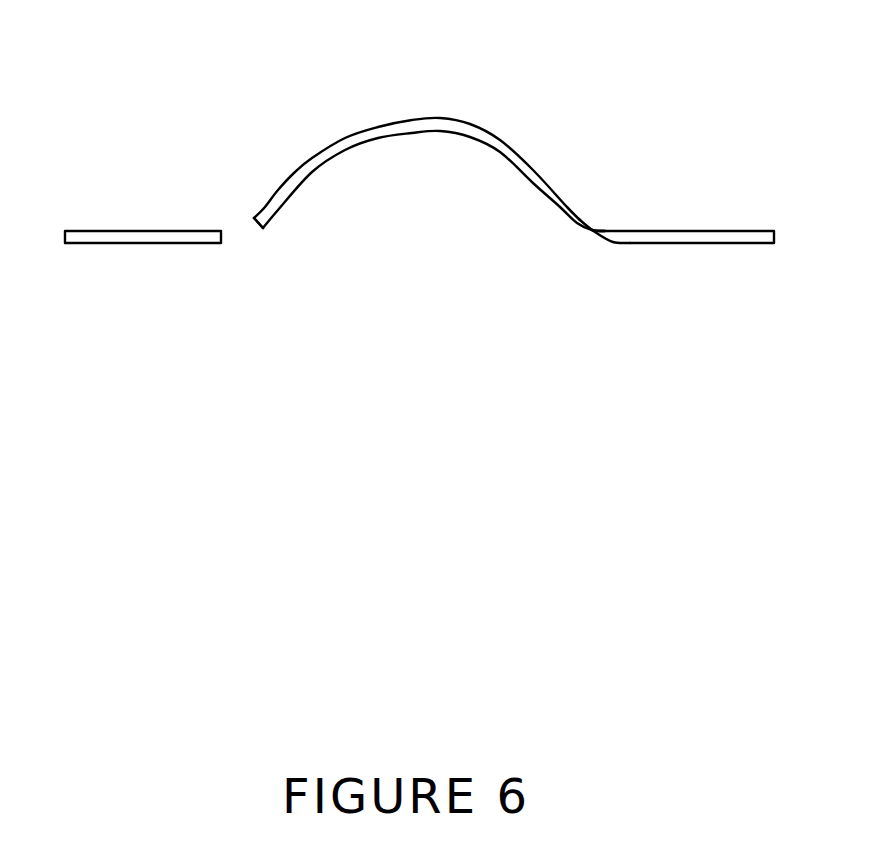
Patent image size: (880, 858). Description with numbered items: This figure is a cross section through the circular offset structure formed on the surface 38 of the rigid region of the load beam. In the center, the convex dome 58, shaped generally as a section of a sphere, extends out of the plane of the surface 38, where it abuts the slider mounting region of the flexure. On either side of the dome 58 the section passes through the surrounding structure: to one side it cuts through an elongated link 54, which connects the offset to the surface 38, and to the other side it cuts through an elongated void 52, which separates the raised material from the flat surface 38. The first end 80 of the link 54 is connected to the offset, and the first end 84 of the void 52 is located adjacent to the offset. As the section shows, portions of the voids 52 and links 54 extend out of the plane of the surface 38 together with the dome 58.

The surface 38 is at (108, 231).
The elongated void 52 is at (243, 228).
The elongated link 54 is at (597, 225).
The convex dome 58 is at (428, 118).
The first end of link 80 is at (577, 207).
The first end of void 84 is at (254, 228).